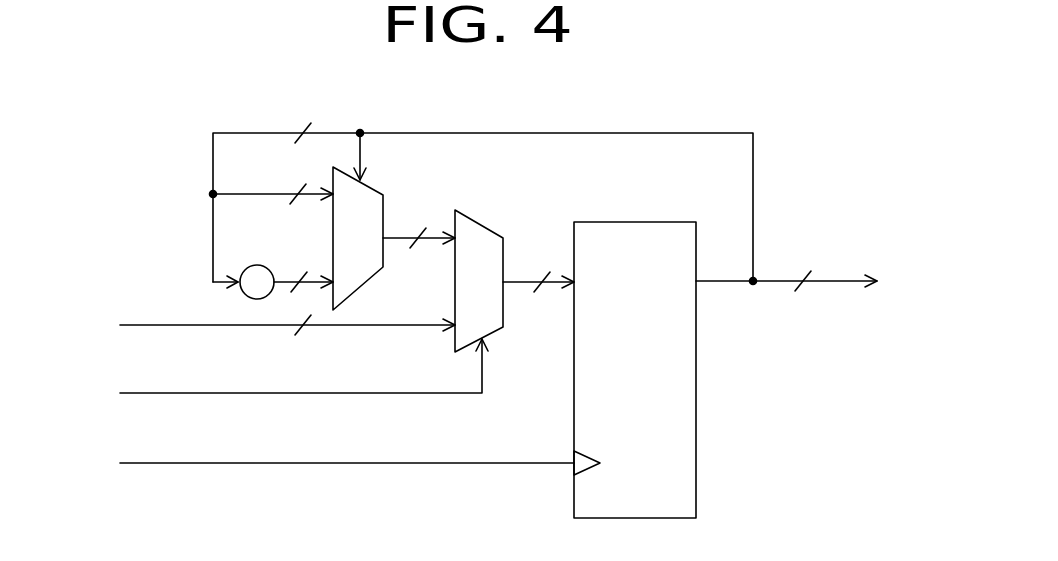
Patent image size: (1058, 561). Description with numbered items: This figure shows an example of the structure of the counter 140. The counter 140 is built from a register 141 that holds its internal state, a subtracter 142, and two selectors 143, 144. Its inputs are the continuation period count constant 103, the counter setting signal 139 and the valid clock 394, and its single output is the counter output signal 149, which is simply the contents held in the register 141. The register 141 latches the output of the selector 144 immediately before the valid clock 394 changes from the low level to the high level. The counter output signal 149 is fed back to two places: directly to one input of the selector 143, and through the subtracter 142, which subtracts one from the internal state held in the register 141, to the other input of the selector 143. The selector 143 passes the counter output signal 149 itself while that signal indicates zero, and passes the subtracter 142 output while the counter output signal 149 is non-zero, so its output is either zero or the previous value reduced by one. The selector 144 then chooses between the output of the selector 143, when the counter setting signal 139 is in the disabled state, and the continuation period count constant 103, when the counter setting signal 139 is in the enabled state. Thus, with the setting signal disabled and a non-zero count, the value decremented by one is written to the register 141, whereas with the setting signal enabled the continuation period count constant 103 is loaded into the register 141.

The counter 140 is at (797, 137).
The register 141 is at (635, 222).
The subtracter 142 is at (258, 265).
The selector 143 is at (383, 208).
The selector 144 is at (483, 222).
The counter output signal 149 is at (837, 283).
The continuation period count constant 103 is at (195, 327).
The counter setting signal 139 is at (195, 395).
The valid clock 394 is at (195, 465).